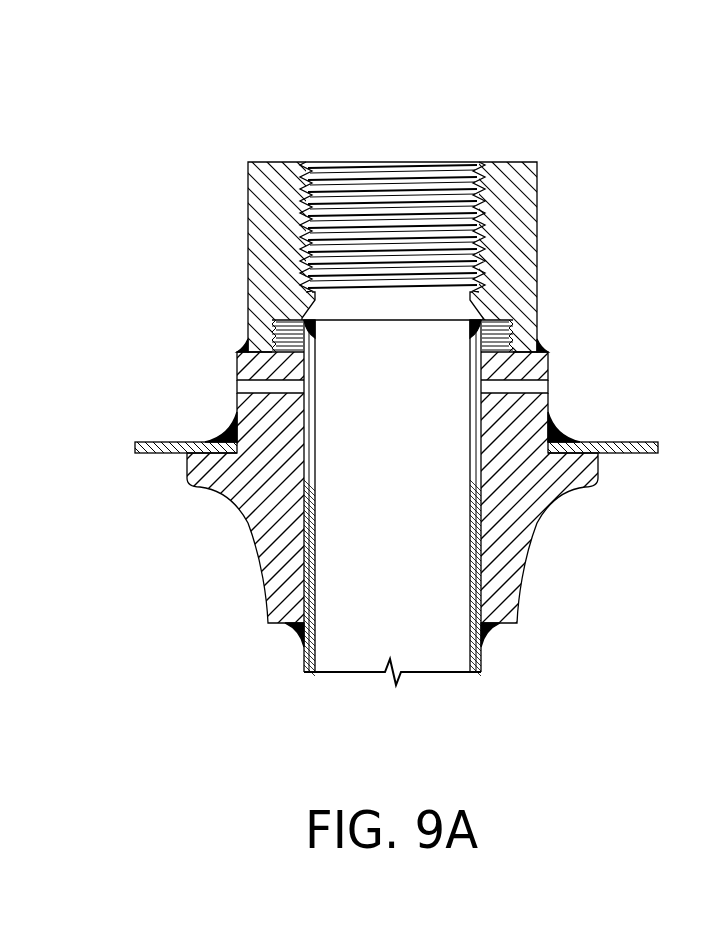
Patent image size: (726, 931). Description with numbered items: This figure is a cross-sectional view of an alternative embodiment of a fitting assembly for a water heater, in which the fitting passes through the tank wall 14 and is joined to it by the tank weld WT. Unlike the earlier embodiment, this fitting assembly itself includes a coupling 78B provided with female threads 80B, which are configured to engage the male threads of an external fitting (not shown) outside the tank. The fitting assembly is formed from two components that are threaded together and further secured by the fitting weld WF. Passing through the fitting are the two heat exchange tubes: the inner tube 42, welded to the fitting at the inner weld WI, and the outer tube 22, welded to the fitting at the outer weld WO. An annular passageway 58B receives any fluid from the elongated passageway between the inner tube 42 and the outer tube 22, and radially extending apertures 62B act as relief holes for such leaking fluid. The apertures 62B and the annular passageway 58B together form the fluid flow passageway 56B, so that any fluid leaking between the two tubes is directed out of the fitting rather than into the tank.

The coupling 78B is at (522, 201).
The female threads 80B is at (312, 187).
The inner tube weld WI is at (478, 312).
The fitting weld WF is at (246, 345).
The fluid flow passageway 56B is at (236, 370).
The radially extending apertures 62B is at (542, 388).
The tank wall weld WT is at (220, 428).
The tank wall 14 is at (622, 442).
The annular passageway 58B is at (470, 463).
The outer tube 22 is at (302, 668).
The inner tube 42 is at (312, 642).
The outer tube weld WO is at (292, 640).